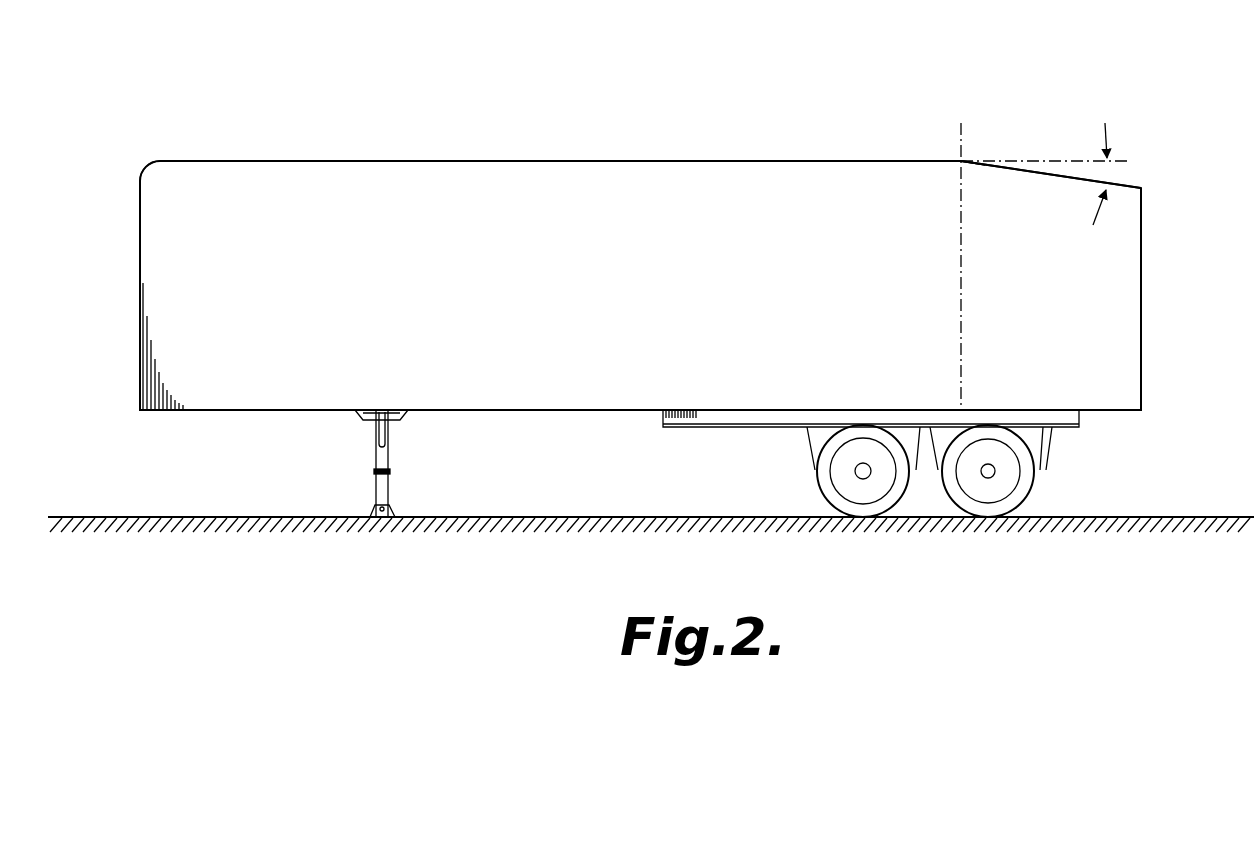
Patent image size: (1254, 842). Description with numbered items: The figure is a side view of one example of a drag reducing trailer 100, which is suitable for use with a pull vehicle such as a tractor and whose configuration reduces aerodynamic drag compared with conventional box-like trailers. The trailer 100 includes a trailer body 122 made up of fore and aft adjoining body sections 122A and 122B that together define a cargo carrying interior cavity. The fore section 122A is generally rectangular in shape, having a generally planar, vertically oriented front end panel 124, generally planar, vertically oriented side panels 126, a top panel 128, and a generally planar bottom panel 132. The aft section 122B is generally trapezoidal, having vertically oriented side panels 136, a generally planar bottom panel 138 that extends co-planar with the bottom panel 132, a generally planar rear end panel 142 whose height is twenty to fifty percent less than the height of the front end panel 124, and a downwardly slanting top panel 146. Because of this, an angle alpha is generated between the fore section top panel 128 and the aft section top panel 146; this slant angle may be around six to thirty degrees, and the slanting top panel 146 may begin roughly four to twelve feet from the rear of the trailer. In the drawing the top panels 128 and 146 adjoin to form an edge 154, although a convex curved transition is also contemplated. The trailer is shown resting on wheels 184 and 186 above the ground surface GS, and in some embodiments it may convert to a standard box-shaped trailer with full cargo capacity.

The drag reducing trailer 100 is at (1067, 107).
The trailer body 122 is at (791, 236).
The fore section 122A is at (214, 190).
The aft section 122B is at (1135, 290).
The front end panel 124 is at (140, 240).
The side panels 126 is at (467, 383).
The top panel 128 is at (520, 160).
The bottom panel 132 is at (537, 411).
The side panels 136 is at (1098, 365).
The bottom panel 138 is at (1112, 413).
The rear end panel 142 is at (1142, 322).
The slanting top panel 146 is at (1043, 176).
The edge 154 is at (961, 160).
The front wheel 184 is at (813, 470).
The rear wheel 186 is at (1040, 470).
The ground surface GS is at (624, 517).